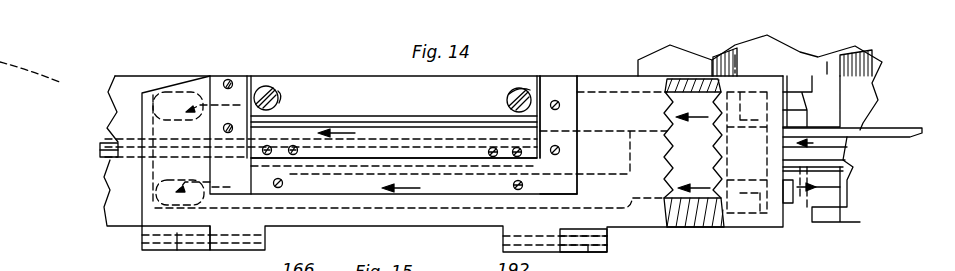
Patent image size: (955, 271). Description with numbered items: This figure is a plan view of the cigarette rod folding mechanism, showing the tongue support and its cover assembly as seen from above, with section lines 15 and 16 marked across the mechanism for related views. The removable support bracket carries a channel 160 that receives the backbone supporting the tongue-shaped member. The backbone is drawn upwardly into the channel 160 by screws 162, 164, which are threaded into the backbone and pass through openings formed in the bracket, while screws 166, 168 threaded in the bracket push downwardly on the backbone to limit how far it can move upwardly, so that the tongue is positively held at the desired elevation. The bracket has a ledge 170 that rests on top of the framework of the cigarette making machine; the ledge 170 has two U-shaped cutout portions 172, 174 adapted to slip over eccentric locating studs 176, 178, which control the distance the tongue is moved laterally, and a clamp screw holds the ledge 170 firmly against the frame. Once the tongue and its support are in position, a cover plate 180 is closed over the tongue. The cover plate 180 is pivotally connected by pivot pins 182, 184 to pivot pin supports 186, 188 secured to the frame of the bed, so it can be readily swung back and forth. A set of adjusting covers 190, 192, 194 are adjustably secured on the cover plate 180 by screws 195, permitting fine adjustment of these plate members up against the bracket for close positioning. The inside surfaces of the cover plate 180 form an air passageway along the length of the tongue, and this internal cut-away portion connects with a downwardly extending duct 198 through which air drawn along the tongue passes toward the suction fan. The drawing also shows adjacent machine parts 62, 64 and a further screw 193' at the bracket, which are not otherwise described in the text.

The section line 15- 15 is at (100, 148).
The section line 16- 16 is at (252, 178).
The guide fixture 62 is at (847, 180).
The blade 64 is at (877, 128).
The channel 160 is at (392, 147).
The screw 162 is at (513, 150).
The screw 164 is at (268, 145).
The screw 166 is at (296, 154).
The screw 168 is at (491, 156).
The ledge 170 is at (490, 85).
The U-shaped cutout portion 172 is at (280, 95).
The U-shaped cutout portion 174 is at (507, 100).
The eccentric locating stud 176 is at (260, 90).
The eccentric locating stud 178 is at (530, 87).
The cover plate 180 is at (140, 170).
The pivot pin 182 is at (588, 246).
The pivot pin 184 is at (157, 247).
The pivot pin support 186 is at (160, 252).
The pivot pin support 188 is at (608, 233).
The adjusting cover 190 is at (212, 117).
The adjusting cover 192 is at (572, 117).
The screw 193' is at (595, 100).
The adjusting cover 194 is at (565, 194).
The screw 195 is at (523, 184).
The duct 198 is at (172, 98).